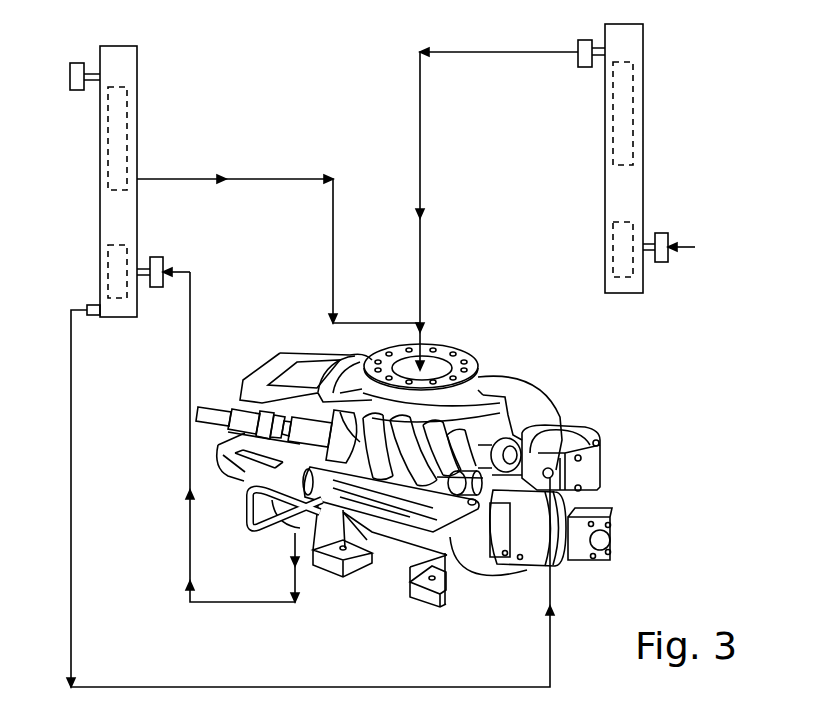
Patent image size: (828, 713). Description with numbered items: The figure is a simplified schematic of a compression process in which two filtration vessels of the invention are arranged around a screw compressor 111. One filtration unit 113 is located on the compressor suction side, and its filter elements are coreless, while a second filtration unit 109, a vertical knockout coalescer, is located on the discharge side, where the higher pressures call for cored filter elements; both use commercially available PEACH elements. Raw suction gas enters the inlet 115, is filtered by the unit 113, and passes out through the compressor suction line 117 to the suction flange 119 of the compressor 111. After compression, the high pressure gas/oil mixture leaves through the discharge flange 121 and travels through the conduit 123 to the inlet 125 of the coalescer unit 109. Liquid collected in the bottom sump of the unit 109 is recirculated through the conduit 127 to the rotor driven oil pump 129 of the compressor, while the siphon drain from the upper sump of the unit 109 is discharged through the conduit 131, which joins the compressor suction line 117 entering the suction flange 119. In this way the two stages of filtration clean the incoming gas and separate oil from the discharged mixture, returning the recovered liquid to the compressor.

The filtration unit 109 is at (137, 85).
The screw compressor 111 is at (522, 360).
The filtration unit 113 is at (643, 62).
The inlet 115 is at (684, 244).
The compressor suction line 117 is at (420, 135).
The suction flange 119 is at (440, 358).
The discharge flange 121 is at (283, 533).
The conduit 123 is at (250, 603).
The inlet 125 is at (165, 258).
The conduit 127 is at (71, 609).
The rotor driven oil pump 129 is at (560, 437).
The conduit 131 is at (250, 179).